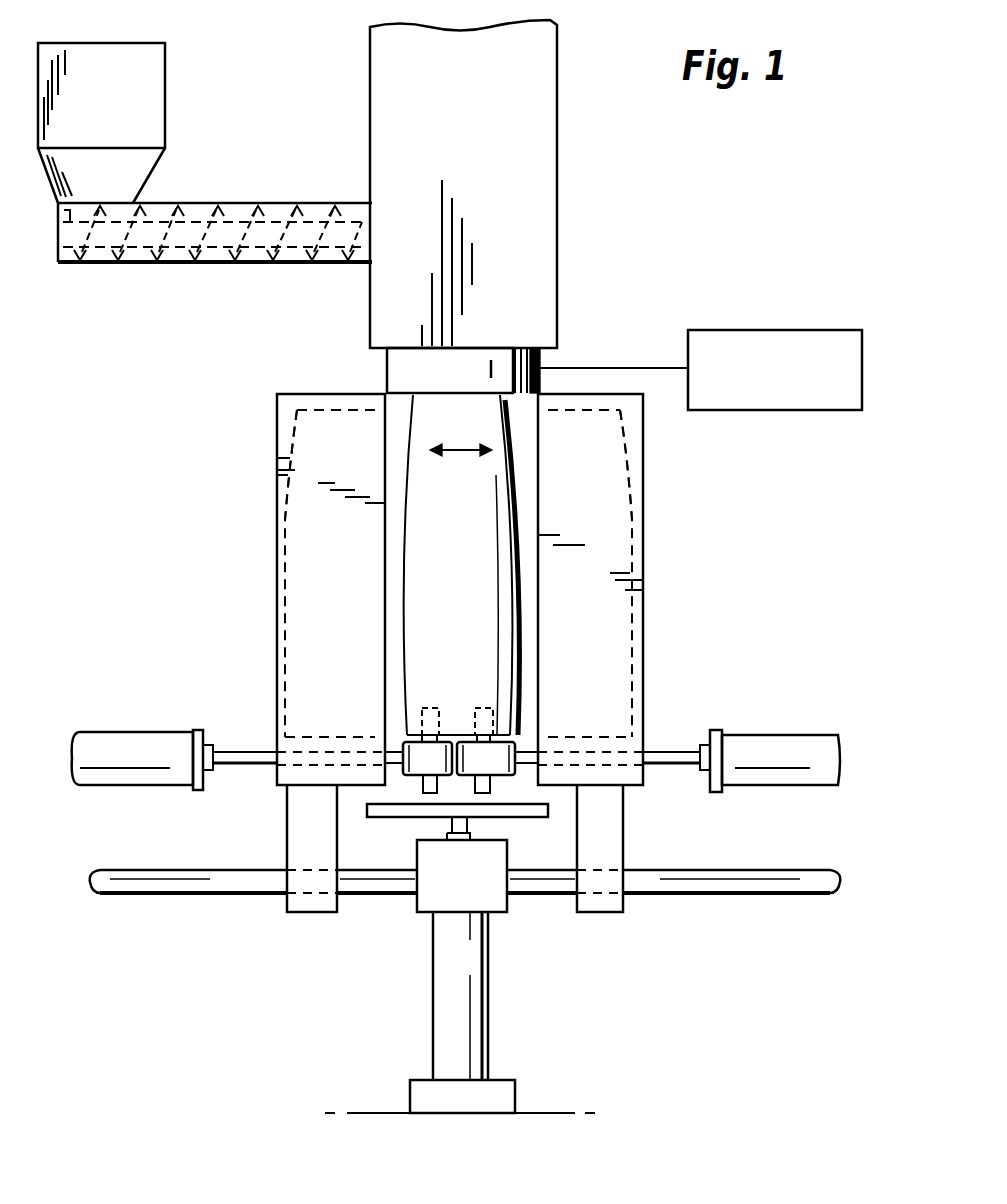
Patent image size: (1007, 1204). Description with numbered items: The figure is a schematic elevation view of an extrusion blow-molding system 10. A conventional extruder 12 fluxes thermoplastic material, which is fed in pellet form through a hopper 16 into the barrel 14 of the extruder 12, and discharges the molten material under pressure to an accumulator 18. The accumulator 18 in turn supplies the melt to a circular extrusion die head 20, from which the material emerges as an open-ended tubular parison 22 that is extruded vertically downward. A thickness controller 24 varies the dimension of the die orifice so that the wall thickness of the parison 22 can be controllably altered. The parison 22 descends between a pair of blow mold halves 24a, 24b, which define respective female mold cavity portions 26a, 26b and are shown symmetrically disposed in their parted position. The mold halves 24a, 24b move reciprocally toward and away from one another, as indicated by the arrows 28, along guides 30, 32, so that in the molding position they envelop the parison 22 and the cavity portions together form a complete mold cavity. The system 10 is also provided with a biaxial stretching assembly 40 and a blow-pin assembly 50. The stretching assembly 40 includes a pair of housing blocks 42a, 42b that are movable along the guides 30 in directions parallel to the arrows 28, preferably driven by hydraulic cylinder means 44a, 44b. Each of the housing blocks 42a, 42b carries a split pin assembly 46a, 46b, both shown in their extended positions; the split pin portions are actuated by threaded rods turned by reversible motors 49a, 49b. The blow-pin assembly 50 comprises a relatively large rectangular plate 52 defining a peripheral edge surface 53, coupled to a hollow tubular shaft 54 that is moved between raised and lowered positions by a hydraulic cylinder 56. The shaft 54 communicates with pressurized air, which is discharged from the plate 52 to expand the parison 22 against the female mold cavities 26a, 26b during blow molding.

The extrusion blow-molding system 10 is at (196, 995).
The extruder 12 is at (118, 276).
The barrel 14 is at (232, 203).
The hopper 16 is at (111, 115).
The accumulator 18 is at (504, 185).
The circular extrusion die head 20 is at (462, 380).
The tubular parison 22 is at (465, 536).
The thickness controller 24 is at (707, 333).
The blow mold half 24a is at (346, 602).
The blow mold half 24b is at (597, 602).
The female mold cavity portion 26a is at (288, 505).
The female mold cavity portion 26b is at (620, 492).
The arrows 28 is at (470, 433).
The guide 30 is at (250, 752).
The guide 32 is at (155, 893).
The biaxial stretching assembly 40 is at (402, 738).
The housing block 42a is at (443, 768).
The housing block 42b is at (503, 768).
The hydraulic cylinder means 44a is at (130, 761).
The hydraulic cylinder means 44b is at (786, 761).
The split pin assembly 46a is at (431, 708).
The split pin assembly 46b is at (487, 708).
The reversible motor 49a is at (423, 788).
The reversible motor 49b is at (482, 793).
The blow-pin assembly 50 is at (350, 826).
The plate 52 is at (527, 818).
The peripheral edge surface 53 is at (392, 818).
The tubular shaft 54 is at (485, 838).
The hydraulic cylinder 56 is at (468, 971).